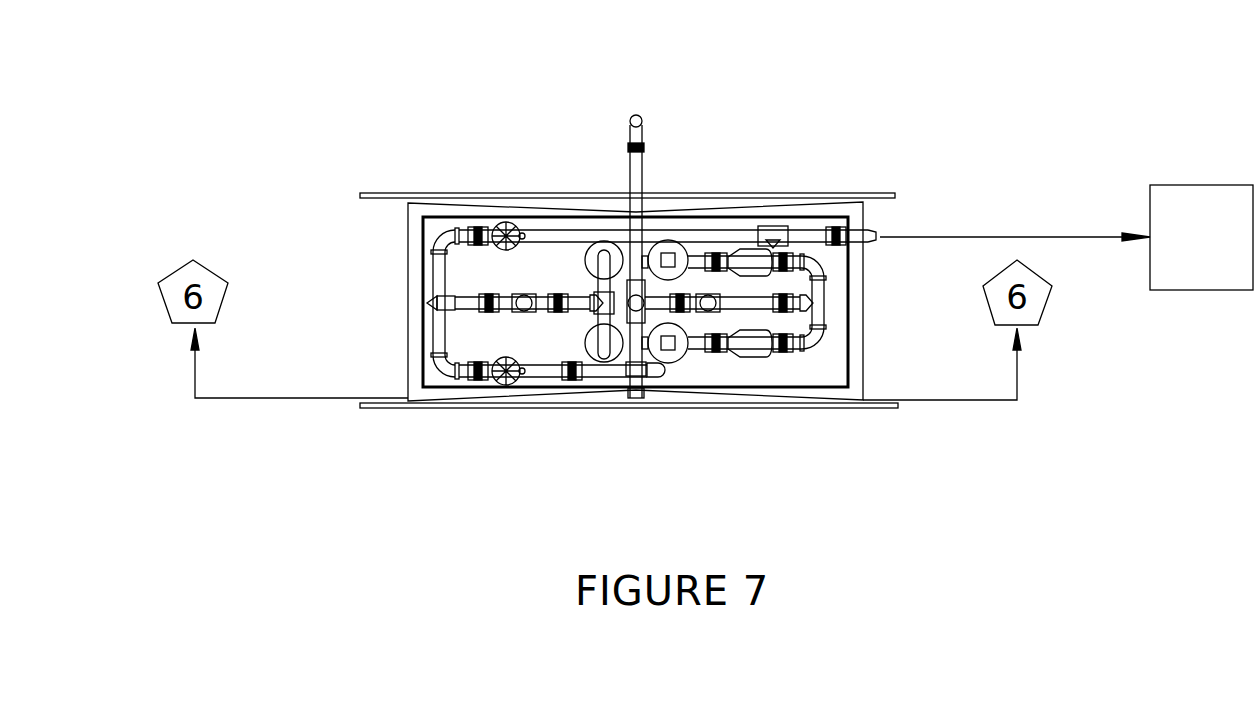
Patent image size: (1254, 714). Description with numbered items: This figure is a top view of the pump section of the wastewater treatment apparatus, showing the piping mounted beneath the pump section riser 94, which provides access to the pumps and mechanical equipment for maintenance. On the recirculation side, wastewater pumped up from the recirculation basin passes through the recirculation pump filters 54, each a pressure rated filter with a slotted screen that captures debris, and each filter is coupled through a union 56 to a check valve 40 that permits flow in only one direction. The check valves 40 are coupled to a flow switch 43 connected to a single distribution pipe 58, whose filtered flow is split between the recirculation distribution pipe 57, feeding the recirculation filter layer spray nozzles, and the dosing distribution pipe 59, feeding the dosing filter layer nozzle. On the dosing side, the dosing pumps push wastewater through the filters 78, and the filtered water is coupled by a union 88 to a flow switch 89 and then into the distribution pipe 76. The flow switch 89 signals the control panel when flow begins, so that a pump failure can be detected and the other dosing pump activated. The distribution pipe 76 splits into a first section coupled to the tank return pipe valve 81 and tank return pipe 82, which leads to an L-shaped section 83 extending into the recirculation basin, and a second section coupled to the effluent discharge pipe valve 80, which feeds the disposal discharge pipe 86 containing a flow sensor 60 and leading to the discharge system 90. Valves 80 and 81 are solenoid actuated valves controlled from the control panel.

The pump section riser 94 is at (372, 192).
The disposal discharge pipe 86 is at (533, 241).
The distribution pipe 76 is at (463, 297).
The effluent discharge pipe valve 80 is at (507, 222).
The tank return pipe valve 81 is at (500, 376).
The flow switch 89 is at (524, 295).
The union 88 is at (560, 312).
The filter 78 is at (603, 241).
The dosing distribution pipe 59 is at (641, 128).
The recirculation distribution pipe 57 is at (632, 392).
The recirculation pump filter 54 is at (667, 240).
The flow switch 43 is at (707, 295).
The check valve 40 is at (760, 248).
The flow sensor 60 is at (790, 251).
The distribution pipe 58 is at (785, 294).
The union 56 is at (717, 353).
The tank return pipe 82 is at (618, 376).
The L-shaped section 83 is at (658, 378).
The discharge system 90 is at (1200, 290).